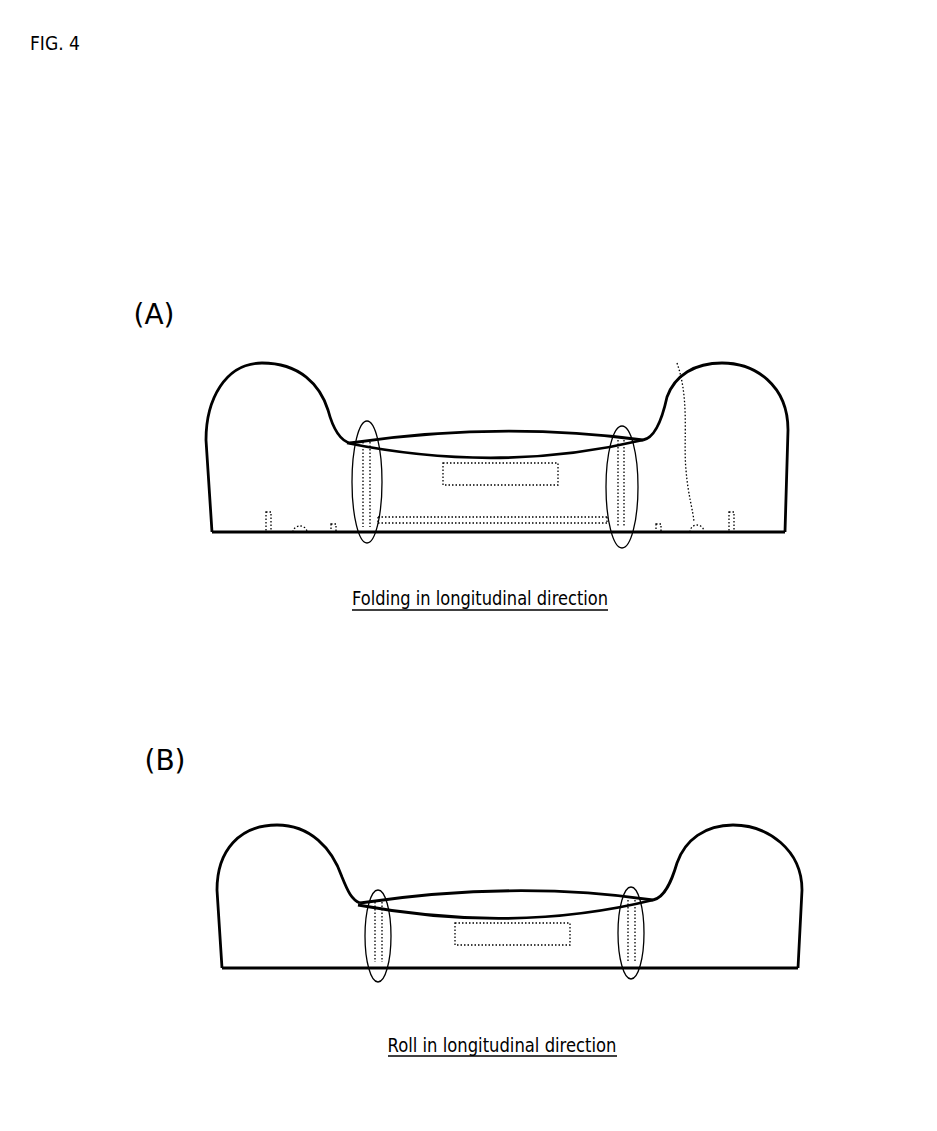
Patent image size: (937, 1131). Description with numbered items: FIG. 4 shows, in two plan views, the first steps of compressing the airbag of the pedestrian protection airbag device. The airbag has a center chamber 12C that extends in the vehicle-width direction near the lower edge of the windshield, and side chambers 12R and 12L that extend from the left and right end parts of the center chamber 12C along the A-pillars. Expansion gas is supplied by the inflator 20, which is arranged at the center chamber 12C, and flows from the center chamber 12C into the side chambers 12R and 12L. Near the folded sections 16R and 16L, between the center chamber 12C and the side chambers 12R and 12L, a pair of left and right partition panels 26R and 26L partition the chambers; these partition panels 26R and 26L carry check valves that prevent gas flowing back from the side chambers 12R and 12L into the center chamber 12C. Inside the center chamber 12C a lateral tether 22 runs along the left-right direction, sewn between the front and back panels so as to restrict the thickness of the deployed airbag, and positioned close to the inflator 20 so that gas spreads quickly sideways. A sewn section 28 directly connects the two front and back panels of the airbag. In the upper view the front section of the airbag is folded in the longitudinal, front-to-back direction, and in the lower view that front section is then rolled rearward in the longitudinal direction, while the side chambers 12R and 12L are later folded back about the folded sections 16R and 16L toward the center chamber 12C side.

The side chamber 12R is at (262, 378).
The side chamber 12L is at (733, 372).
The center chamber 12C is at (580, 472).
The folded section 16R is at (367, 418).
The folded section 16L is at (618, 550).
The inflator 20 is at (463, 463).
The lateral tether 22 is at (420, 517).
The partition panel 26R is at (348, 525).
The partition panel 26L is at (625, 530).
The sewn section 28 is at (683, 436).